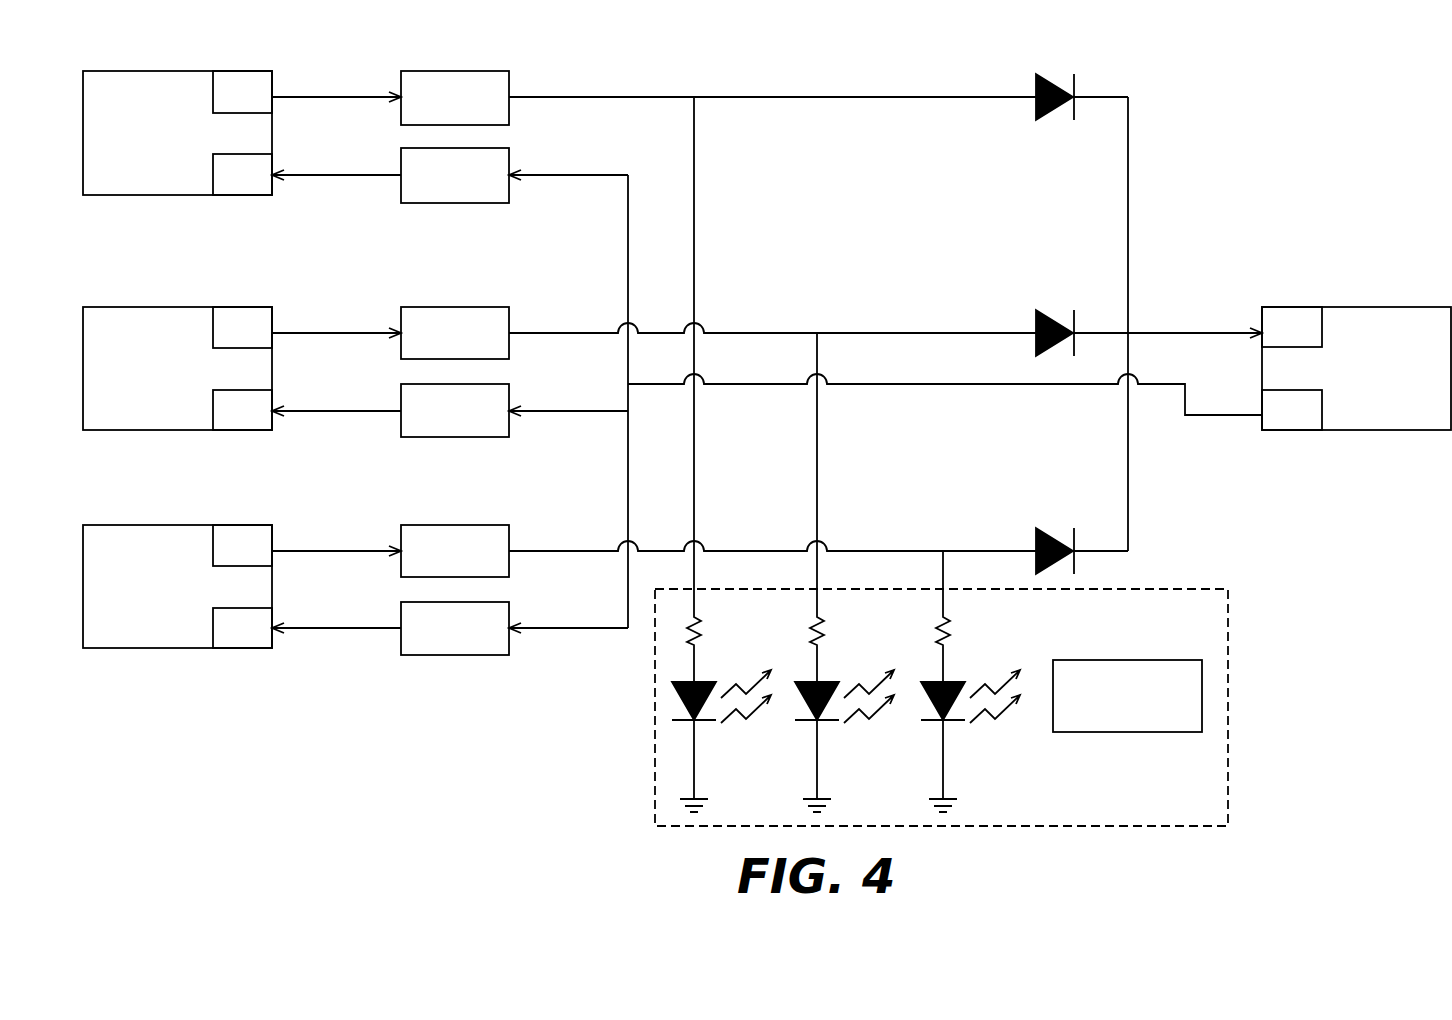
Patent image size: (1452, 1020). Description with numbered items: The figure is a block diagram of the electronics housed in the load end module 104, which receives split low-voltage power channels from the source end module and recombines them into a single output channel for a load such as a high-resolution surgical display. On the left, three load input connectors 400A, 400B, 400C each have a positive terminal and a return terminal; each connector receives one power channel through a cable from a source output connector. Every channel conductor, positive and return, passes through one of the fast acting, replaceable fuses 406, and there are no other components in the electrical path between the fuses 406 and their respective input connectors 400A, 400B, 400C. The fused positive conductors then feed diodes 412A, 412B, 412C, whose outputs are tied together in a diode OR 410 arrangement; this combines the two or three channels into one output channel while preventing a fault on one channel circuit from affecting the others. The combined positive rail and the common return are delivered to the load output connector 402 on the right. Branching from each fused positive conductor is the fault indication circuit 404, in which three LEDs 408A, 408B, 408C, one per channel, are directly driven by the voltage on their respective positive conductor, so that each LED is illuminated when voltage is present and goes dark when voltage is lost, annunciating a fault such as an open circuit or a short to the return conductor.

The load end module 104 is at (1320, 61).
The load input connector 400A is at (272, 72).
The load input connector 400B is at (272, 307).
The load input connector 400C is at (272, 525).
The load output connector 402 is at (1297, 307).
The fault indication circuit 404 is at (1239, 580).
The fuses 406 is at (388, 658).
The LED 408A is at (701, 722).
The LED 408B is at (824, 722).
The LED 408C is at (950, 722).
The diode OR 410 is at (1152, 227).
The diode 412A is at (1036, 80).
The diode 412B is at (1036, 316).
The diode 412C is at (1036, 534).